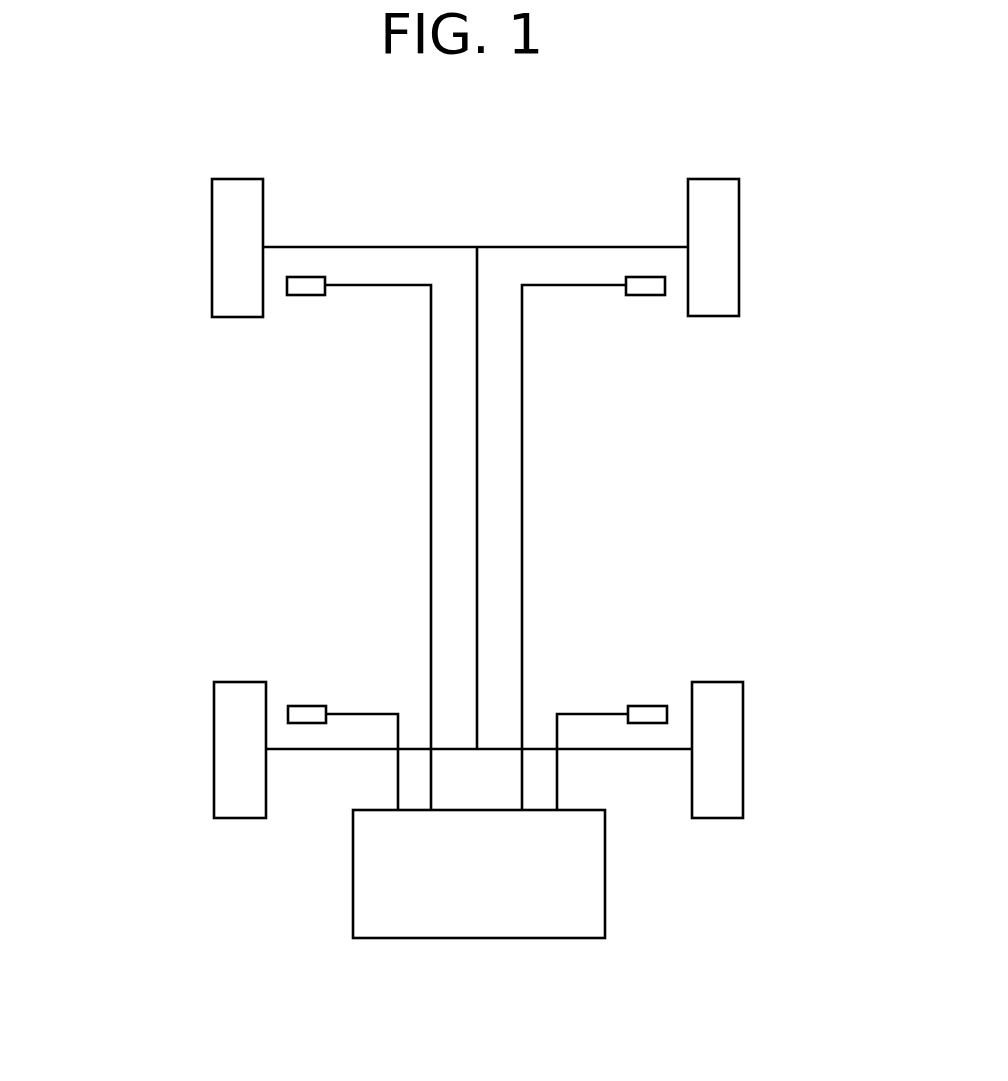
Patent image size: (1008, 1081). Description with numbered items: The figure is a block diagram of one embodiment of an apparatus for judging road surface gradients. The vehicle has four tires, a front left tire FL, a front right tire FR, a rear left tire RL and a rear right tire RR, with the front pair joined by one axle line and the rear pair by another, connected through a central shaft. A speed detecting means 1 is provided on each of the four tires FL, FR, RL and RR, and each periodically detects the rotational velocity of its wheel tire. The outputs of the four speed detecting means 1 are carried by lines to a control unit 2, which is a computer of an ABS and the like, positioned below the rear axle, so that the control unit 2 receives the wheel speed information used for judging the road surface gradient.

The speed detecting means 1 is at (297, 286).
The control unit 2 is at (591, 917).
The front left tire FL is at (226, 220).
The front right tire FR is at (723, 222).
The rear left tire RL is at (228, 733).
The rear right tire RR is at (727, 737).